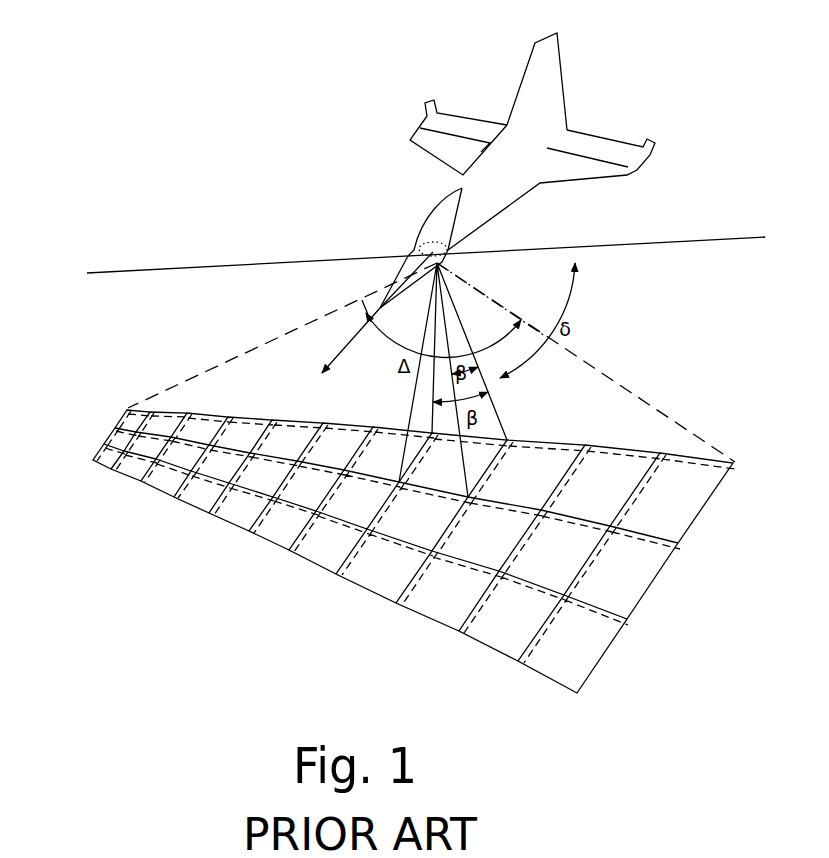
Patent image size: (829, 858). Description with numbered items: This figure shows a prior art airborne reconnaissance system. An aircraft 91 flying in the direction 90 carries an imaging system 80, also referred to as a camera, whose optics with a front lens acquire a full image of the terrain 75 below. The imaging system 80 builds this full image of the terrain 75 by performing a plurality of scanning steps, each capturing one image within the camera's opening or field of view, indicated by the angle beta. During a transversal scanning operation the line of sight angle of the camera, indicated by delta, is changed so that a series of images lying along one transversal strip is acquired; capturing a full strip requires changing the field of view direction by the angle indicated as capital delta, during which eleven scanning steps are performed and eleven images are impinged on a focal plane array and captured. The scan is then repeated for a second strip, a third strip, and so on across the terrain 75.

The terrain 75 is at (113, 430).
The imaging system 80 is at (402, 253).
The direction 90 is at (352, 340).
The aircraft 91 is at (523, 65).